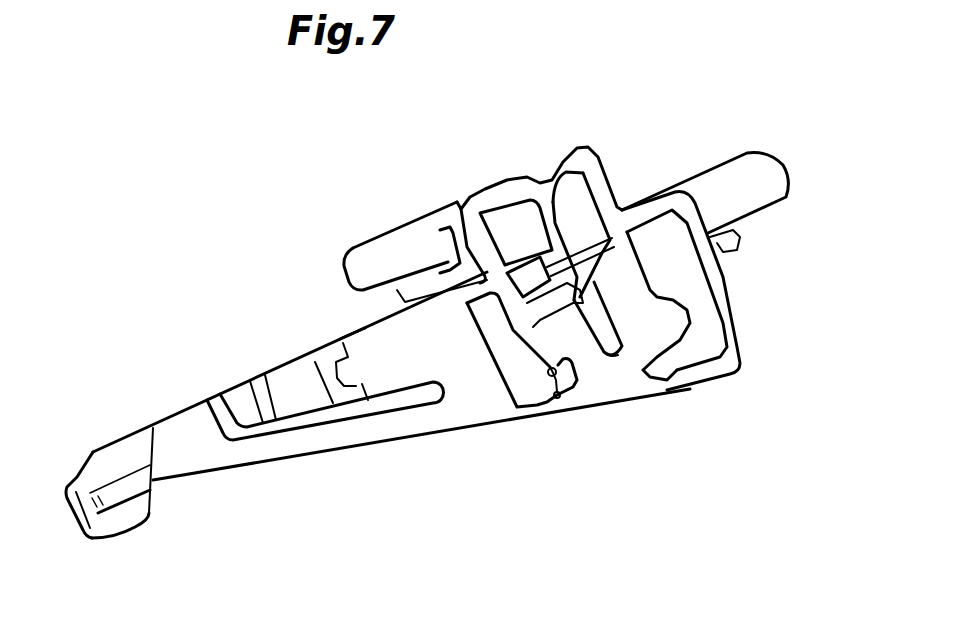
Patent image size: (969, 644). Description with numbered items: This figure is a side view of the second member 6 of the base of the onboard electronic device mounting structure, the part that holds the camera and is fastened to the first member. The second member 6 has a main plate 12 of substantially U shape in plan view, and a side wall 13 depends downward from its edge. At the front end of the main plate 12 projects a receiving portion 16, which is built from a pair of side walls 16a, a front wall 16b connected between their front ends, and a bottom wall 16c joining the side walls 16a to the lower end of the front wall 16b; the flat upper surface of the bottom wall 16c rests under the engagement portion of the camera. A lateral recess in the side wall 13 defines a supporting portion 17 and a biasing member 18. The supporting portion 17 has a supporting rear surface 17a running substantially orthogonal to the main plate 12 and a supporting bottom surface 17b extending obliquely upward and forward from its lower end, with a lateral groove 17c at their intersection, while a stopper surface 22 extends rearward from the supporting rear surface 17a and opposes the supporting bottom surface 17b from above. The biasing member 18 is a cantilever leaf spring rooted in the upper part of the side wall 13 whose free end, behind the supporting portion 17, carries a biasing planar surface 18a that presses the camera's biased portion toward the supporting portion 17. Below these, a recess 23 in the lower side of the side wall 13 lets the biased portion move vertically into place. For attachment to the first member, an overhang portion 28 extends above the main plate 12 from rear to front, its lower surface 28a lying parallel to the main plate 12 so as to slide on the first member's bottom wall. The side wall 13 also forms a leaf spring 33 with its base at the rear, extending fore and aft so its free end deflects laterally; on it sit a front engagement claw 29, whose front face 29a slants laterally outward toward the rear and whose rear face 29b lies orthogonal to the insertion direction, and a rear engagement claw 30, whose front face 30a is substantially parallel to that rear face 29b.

The second member 6 is at (609, 106).
The main plate 12 is at (786, 167).
The side wall 13 is at (738, 333).
The receiving portion 16 is at (98, 540).
The side wall of receiving portion 16a is at (100, 470).
The front wall 16b is at (70, 510).
The bottom wall 16c is at (140, 530).
The supporting portion 17 is at (528, 378).
The supporting rear surface 17a is at (550, 347).
The supporting bottom surface 17b is at (577, 356).
The groove 17c is at (563, 382).
The biasing member 18 is at (613, 322).
The biasing planar surface 18a is at (601, 358).
The stopper surface 22 is at (590, 287).
The recess 23 is at (655, 394).
The overhang portion 28 is at (412, 238).
The lower surface of overhang portion 28a is at (388, 293).
The front engagement claw 29 is at (231, 383).
The front face of front engagement claw 29a is at (225, 405).
The rear face of front engagement claw 29b is at (263, 412).
The rear engagement claw 30 is at (321, 352).
The front face of rear engagement claw 30a is at (290, 350).
The leaf spring 33 is at (351, 327).